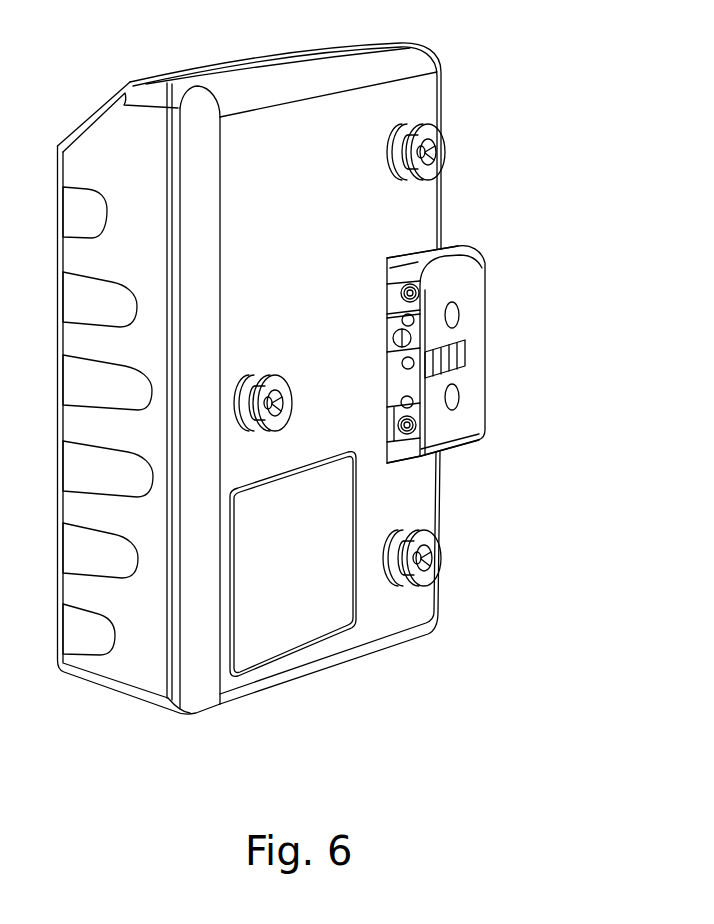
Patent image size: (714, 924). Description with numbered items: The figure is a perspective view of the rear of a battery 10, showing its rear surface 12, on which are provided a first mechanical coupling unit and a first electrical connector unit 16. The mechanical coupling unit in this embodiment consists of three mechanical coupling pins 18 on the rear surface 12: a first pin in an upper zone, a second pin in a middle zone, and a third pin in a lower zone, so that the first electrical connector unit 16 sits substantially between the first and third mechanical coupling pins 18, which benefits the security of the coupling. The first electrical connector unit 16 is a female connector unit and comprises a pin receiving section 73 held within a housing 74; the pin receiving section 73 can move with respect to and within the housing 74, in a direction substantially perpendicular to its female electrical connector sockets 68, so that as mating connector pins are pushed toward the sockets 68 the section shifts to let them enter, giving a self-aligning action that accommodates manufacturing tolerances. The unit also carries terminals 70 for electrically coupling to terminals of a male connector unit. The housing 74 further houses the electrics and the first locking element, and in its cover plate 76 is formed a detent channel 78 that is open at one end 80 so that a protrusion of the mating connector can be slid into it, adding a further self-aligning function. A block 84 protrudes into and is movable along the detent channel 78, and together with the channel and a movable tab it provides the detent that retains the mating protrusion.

The battery 10 is at (559, 115).
The rear surface 12 is at (420, 498).
The first electrical connector unit 16 is at (393, 251).
The mechanical coupling pins 18 is at (440, 134).
The female electrical connector sockets 68 is at (414, 292).
The terminals 70 is at (414, 320).
The pin receiving section 73 is at (396, 263).
The housing 74 is at (448, 452).
The cover plate 76 is at (492, 360).
The detent channel 78 is at (455, 370).
The open end 80 is at (402, 360).
The block 84 is at (458, 352).